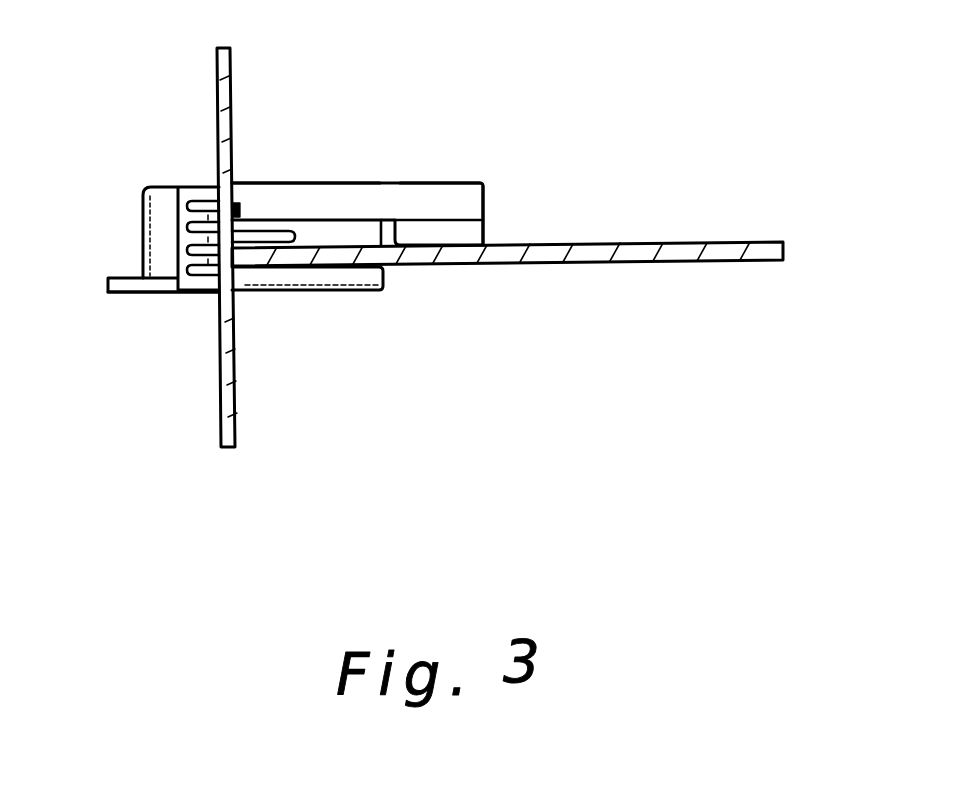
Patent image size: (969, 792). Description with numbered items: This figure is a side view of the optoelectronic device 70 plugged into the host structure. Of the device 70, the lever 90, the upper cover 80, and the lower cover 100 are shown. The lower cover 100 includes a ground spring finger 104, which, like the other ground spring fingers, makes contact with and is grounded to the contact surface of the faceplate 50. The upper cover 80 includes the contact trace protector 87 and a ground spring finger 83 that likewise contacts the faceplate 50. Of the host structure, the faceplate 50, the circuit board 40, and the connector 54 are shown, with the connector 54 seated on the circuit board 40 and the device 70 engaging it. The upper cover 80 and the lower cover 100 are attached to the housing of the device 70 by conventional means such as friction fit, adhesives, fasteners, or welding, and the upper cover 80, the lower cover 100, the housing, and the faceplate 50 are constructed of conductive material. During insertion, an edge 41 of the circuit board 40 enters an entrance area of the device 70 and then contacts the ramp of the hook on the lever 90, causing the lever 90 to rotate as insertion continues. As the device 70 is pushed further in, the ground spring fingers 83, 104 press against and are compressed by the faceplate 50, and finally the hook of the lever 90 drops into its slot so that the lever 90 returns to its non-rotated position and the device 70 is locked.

The circuit board 40 is at (729, 240).
The edge 41 is at (231, 258).
The faceplate 50 is at (230, 87).
The connector 54 is at (486, 228).
The device 70 is at (300, 183).
The upper cover 80 is at (382, 183).
The ground spring finger 83 is at (213, 180).
The contact trace protector 87 is at (457, 183).
The lever 90 is at (118, 277).
The lower cover 100 is at (357, 290).
The ground spring finger 104 is at (210, 297).